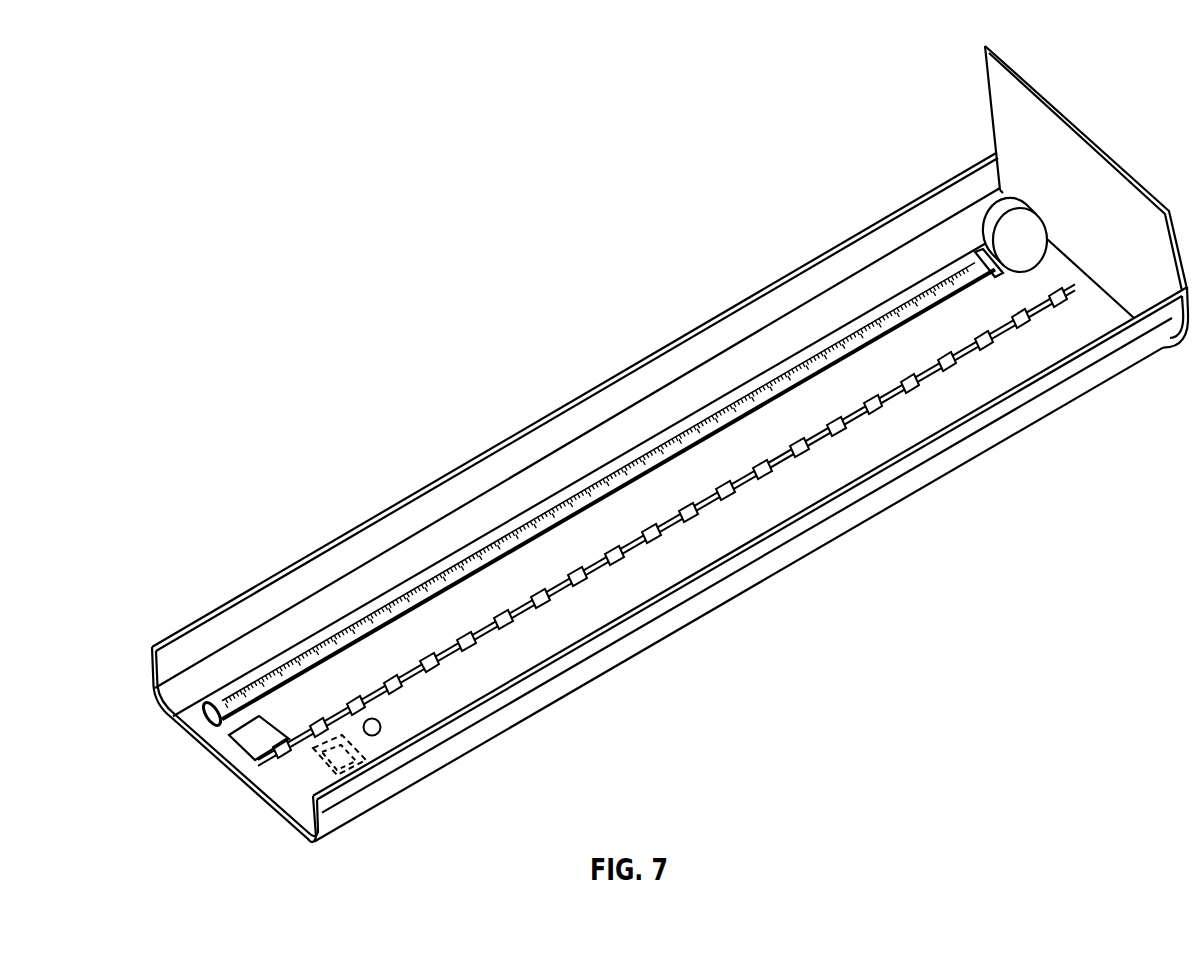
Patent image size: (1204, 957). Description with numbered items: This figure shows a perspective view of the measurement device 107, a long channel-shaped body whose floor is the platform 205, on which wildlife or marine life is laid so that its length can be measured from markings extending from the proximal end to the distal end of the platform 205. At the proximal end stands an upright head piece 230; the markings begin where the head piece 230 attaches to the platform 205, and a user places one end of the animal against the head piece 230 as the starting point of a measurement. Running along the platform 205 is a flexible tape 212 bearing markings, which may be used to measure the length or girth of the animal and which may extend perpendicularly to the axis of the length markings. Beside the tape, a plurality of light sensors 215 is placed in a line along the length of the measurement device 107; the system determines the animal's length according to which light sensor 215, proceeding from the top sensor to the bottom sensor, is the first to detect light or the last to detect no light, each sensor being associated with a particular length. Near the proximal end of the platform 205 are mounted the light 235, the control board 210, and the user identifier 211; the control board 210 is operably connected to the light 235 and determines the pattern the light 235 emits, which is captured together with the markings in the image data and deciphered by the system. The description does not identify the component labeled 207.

The measurement device 107 is at (261, 255).
The channel housing 207 is at (460, 470).
The head piece 230 is at (995, 70).
The flexible tape 212 is at (940, 297).
The control board 210 is at (287, 672).
The light sensor 215 is at (873, 400).
The user identifier 211 is at (248, 728).
The light 235 is at (372, 719).
The platform 205 is at (452, 692).